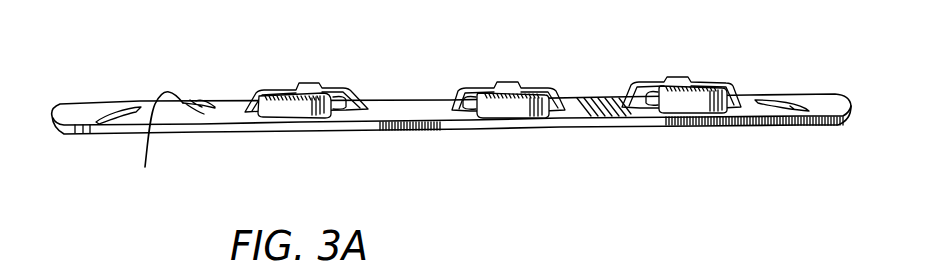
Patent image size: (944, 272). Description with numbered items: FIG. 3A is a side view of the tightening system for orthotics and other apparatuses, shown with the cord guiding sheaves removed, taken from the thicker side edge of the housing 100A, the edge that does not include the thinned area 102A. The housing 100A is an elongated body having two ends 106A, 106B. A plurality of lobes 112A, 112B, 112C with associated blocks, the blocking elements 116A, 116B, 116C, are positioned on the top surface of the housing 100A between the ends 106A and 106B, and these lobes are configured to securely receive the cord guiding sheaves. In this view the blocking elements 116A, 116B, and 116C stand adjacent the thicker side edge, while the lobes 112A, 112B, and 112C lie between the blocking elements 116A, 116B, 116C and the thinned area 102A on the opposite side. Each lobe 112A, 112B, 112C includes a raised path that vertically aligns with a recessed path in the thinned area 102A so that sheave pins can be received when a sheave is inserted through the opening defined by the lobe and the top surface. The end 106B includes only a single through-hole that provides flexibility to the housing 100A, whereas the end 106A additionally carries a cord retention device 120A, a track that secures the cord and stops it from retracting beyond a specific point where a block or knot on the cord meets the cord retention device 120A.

The housing 100A is at (435, 132).
The thinned area 102A is at (220, 100).
The end 106A is at (65, 107).
The end 106B is at (827, 100).
The lobe 112A is at (310, 82).
The lobe 112B is at (502, 80).
The lobe 112C is at (675, 77).
The blocking element 116A is at (297, 107).
The blocking element 116B is at (512, 107).
The blocking element 116C is at (700, 103).
The cord retention device 120A is at (152, 143).